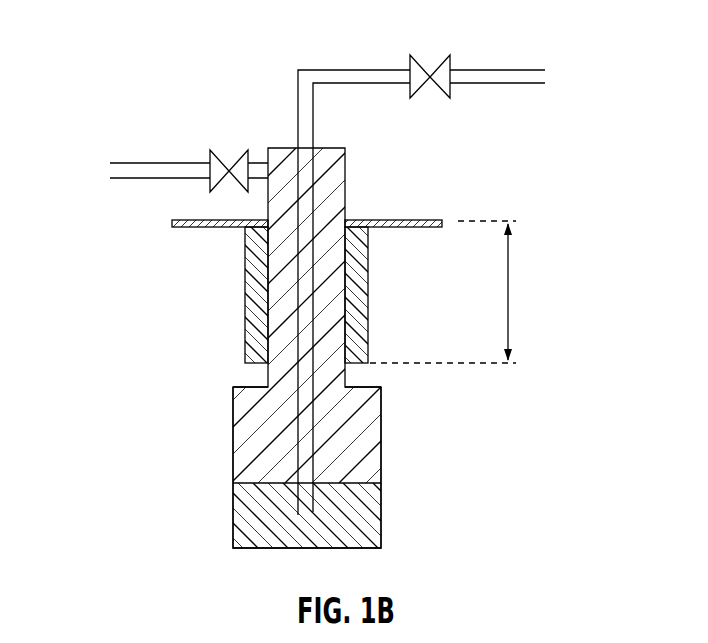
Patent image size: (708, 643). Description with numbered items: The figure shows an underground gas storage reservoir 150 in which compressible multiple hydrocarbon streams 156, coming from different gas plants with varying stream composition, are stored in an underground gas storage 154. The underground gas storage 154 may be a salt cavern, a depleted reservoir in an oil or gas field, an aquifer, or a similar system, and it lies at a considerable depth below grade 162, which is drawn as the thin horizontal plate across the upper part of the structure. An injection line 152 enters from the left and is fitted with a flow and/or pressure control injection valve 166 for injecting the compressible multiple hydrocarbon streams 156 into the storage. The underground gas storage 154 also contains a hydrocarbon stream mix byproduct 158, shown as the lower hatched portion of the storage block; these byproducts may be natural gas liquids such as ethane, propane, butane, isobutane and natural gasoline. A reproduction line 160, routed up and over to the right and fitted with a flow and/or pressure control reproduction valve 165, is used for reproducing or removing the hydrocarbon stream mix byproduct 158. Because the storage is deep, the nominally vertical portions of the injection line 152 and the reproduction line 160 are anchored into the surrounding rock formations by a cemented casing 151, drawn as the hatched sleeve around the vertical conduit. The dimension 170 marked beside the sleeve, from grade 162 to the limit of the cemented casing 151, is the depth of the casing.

The underground gas storage reservoir 150 is at (350, 289).
The cemented casing 151 is at (243, 308).
The injection line 152 is at (108, 172).
The underground gas storage 154 is at (289, 464).
The compressible multiple hydrocarbon streams 156 is at (260, 430).
The hydrocarbon stream mix byproduct 158 is at (258, 513).
The reproduction line 160 is at (547, 75).
The grade 162 is at (409, 220).
The reproduction valve 165 is at (413, 56).
The injection valve 166 is at (210, 152).
The depth of the casing 170 is at (512, 292).